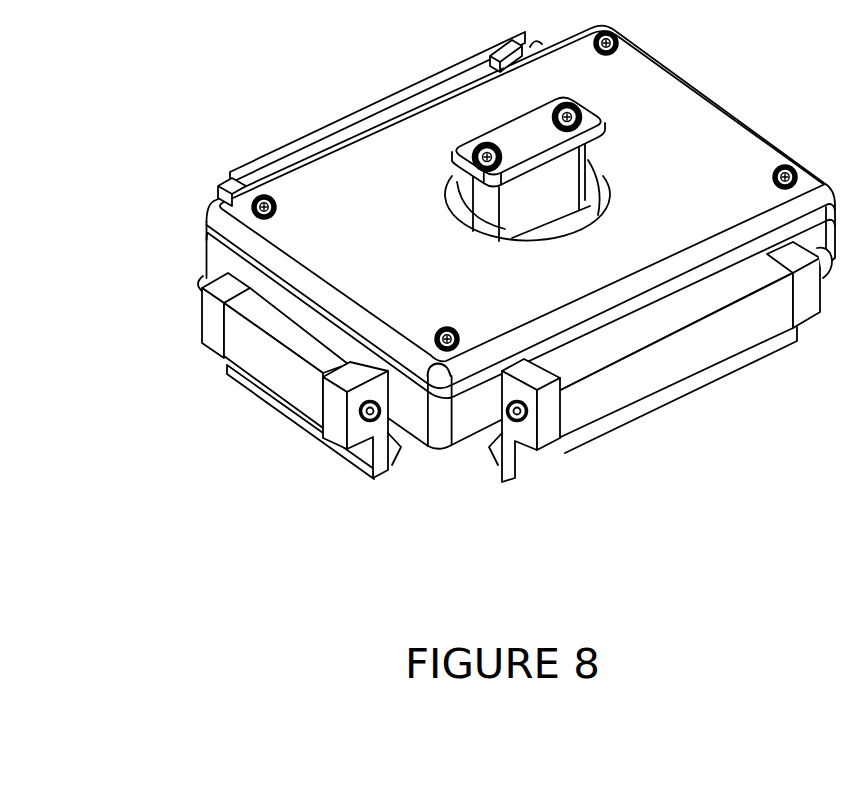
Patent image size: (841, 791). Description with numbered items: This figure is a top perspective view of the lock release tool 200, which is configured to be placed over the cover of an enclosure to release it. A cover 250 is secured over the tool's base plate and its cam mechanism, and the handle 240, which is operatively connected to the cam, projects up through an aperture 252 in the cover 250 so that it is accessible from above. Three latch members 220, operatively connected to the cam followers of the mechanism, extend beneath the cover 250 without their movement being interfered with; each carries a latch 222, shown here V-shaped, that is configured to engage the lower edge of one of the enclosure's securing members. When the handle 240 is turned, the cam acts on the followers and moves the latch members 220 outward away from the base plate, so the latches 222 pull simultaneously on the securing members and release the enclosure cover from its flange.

The lock release tool 200 is at (250, 80).
The latch member 220 is at (273, 365).
The latch 222 is at (400, 444).
The handle 240 is at (528, 137).
The cover 250 is at (318, 231).
The aperture 252 is at (565, 226).